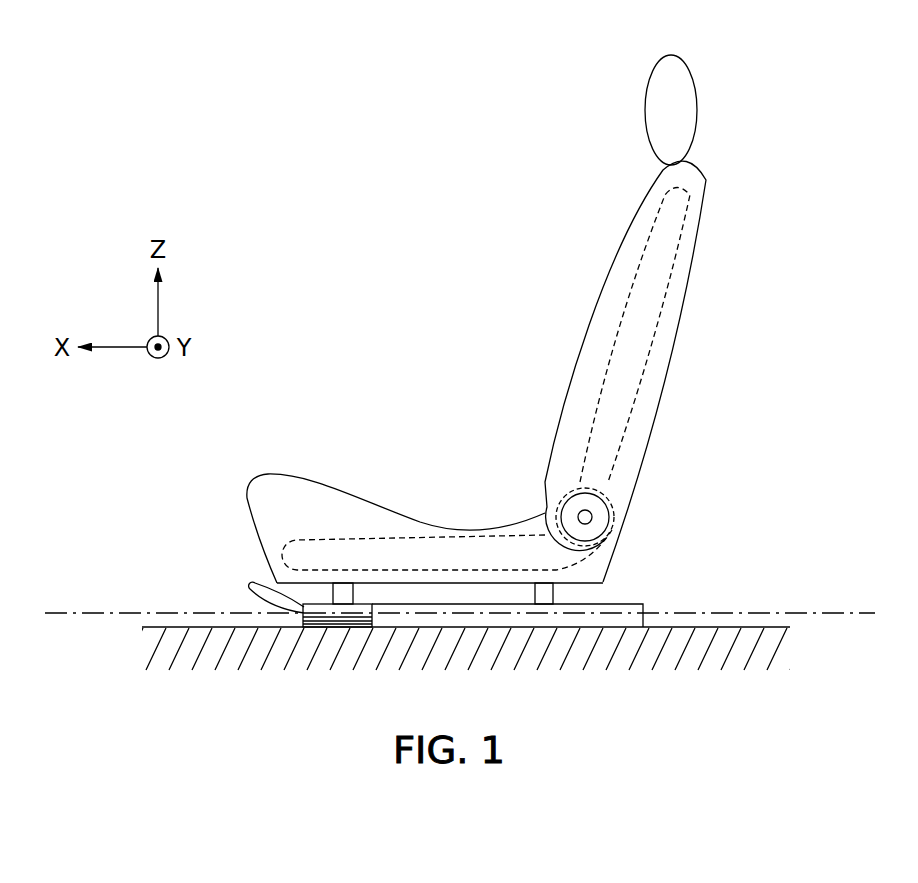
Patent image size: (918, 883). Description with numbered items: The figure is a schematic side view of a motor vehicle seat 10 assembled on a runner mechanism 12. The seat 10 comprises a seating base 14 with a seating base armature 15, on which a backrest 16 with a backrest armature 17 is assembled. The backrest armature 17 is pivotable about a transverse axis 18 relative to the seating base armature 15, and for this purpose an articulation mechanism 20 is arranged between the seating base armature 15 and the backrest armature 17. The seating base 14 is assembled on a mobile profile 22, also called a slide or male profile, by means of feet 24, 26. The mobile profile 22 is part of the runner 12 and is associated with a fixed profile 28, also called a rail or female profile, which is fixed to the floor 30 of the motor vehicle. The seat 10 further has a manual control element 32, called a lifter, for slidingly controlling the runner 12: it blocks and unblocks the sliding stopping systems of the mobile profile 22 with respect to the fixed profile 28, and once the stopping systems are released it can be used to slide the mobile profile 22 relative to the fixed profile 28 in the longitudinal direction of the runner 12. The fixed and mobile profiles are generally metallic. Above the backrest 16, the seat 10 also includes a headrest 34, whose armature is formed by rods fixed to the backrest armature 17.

The motor vehicle seat 10 is at (367, 327).
The runner mechanism 12 is at (183, 548).
The seating base 14 is at (263, 503).
The seating base armature 15 is at (445, 540).
The backrest 16 is at (612, 303).
The backrest armature 17 is at (647, 358).
The transverse axis 18 is at (592, 520).
The articulation mechanism 20 is at (597, 505).
The mobile profile 22 is at (311, 603).
The foot 24 is at (343, 587).
The foot 26 is at (553, 594).
The fixed profile 28 is at (590, 618).
The floor 30 is at (742, 628).
The manual control element 32 is at (261, 602).
The headrest 34 is at (699, 93).